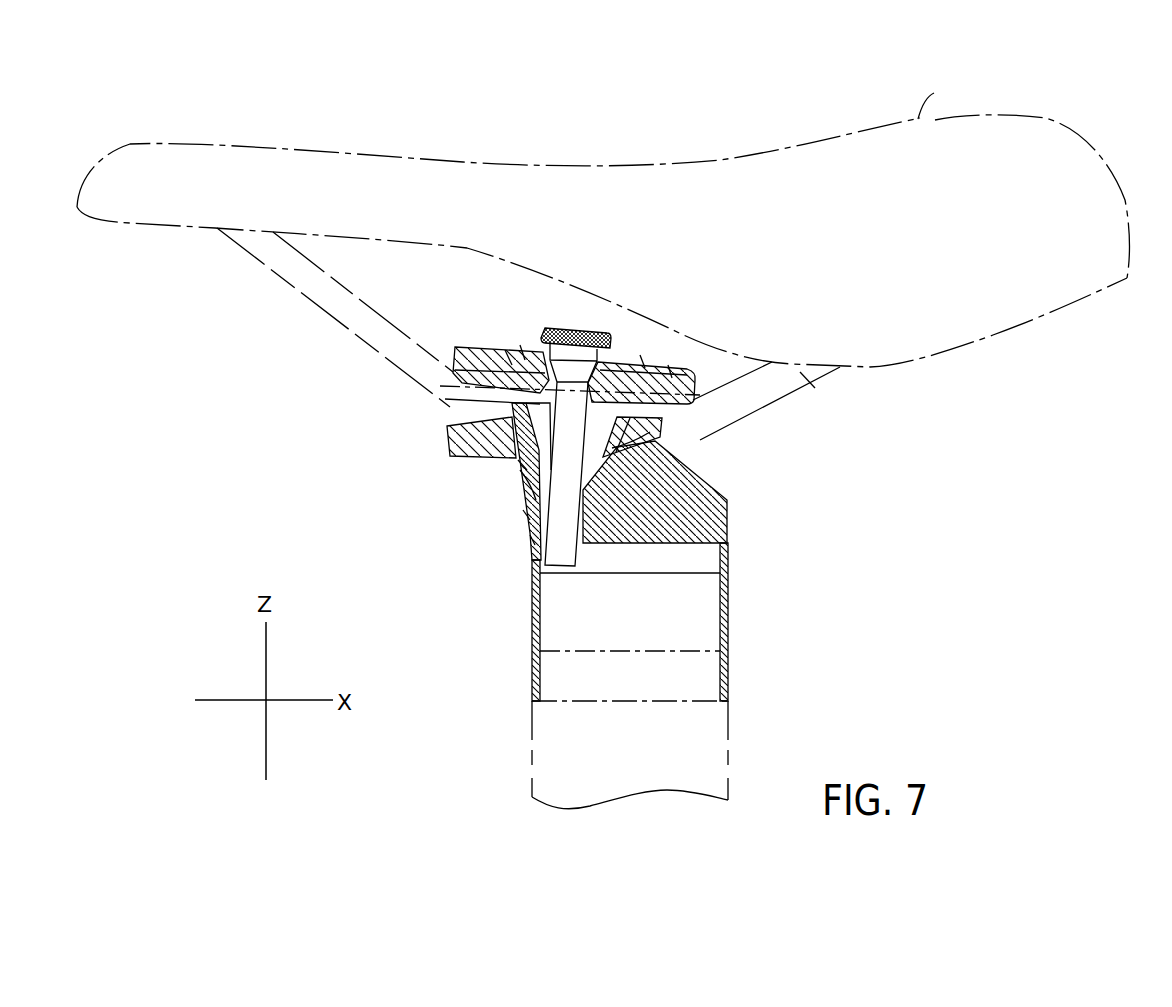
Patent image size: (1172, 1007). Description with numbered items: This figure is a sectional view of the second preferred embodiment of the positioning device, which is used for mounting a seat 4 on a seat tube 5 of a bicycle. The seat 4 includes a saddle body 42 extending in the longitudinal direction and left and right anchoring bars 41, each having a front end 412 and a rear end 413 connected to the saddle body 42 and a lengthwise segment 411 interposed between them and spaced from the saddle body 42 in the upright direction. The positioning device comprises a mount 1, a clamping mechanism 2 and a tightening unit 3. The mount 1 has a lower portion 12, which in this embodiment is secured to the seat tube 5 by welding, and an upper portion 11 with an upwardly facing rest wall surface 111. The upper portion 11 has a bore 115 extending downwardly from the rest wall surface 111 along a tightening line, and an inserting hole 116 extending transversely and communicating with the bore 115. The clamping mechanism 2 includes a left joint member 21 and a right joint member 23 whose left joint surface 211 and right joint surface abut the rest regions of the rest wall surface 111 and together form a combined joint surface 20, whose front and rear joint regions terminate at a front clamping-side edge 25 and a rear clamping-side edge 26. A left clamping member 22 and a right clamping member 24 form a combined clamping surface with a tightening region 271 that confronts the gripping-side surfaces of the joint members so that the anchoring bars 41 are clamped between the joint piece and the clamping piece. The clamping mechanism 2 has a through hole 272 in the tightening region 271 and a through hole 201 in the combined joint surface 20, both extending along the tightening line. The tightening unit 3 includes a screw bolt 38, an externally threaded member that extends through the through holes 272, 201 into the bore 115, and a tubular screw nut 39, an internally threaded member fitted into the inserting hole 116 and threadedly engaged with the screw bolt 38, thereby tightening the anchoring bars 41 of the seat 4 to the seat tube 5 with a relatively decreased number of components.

The mount 1 is at (727, 512).
The upper portion 11 is at (446, 452).
The rest wall surface 111 is at (518, 470).
The bore 115 is at (523, 510).
The inserting hole 116 is at (533, 535).
The lower portion 12 is at (532, 620).
The clamping mechanism 2 is at (265, 417).
The combined joint surface 20 is at (450, 496).
The through hole 201 is at (518, 490).
The left joint member 21 is at (493, 437).
The right joint member 23 is at (450, 434).
The left joint surface 211 is at (633, 476).
The left clamping member 22 is at (483, 382).
The right clamping member 24 is at (455, 380).
The front clamping-side edge 25 is at (514, 348).
The rear clamping-side edge 26 is at (668, 365).
The tightening region 271 is at (641, 355).
The through hole 272 is at (522, 345).
The tightening unit 3 is at (559, 340).
The screw bolt 38 is at (574, 327).
The tubular screw nut 39 is at (544, 510).
The seat 4 is at (644, 163).
The anchoring bar 41 is at (548, 334).
The lengthwise segment 411 is at (693, 412).
The front end 412 is at (302, 279).
The rear end 413 is at (795, 371).
The saddle body 42 is at (938, 92).
The seat tube 5 is at (729, 741).